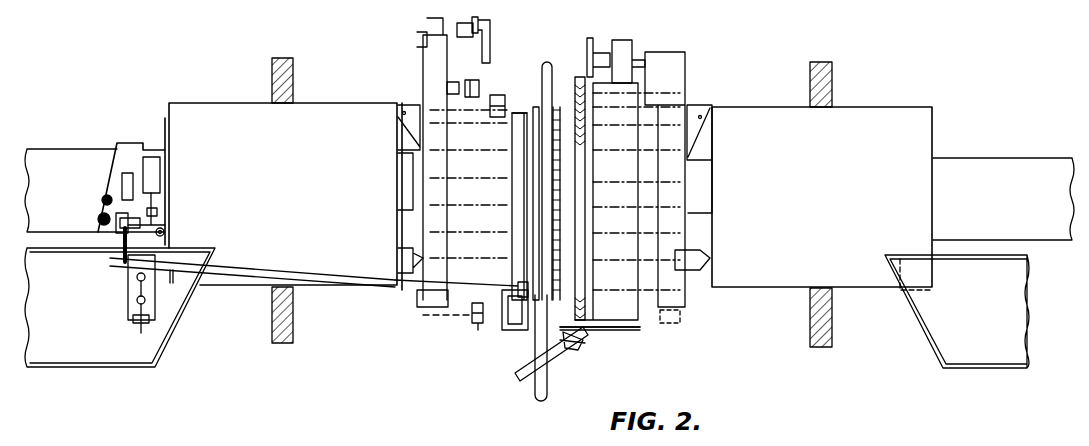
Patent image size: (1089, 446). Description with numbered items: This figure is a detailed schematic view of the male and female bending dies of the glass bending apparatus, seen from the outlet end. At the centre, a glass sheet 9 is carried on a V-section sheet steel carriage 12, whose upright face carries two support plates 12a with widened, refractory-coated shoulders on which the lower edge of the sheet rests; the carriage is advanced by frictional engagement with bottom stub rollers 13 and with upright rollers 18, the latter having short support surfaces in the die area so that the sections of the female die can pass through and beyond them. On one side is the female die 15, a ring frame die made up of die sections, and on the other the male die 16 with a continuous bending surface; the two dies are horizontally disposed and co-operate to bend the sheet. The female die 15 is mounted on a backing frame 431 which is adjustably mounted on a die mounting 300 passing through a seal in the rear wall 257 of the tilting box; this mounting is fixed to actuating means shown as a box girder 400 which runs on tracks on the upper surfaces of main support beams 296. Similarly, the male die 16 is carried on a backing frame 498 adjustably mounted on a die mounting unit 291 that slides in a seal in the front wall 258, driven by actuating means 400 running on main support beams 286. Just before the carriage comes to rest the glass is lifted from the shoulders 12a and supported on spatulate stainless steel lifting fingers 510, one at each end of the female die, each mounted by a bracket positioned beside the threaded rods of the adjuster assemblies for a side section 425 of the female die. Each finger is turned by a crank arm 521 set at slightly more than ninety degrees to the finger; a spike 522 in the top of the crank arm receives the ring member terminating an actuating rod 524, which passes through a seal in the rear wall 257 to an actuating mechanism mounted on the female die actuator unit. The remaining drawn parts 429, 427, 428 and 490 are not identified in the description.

The box girder 400 is at (77, 157).
The main support beams 296 is at (110, 345).
The rear wall 257 is at (272, 72).
The die mounting 300 is at (332, 112).
The actuating rod 524 is at (337, 280).
The backing frame 431 is at (422, 308).
The column 429 is at (423, 72).
The bolt 427 is at (498, 95).
The female die 15 is at (524, 98).
The glass sheet 9 is at (560, 113).
The upright rollers 18 is at (535, 132).
The male die 16 is at (582, 53).
The side section 425 is at (527, 218).
The spike 522 is at (523, 285).
The bolt 428 is at (478, 330).
The crank arm 521 is at (523, 333).
The lifting finger 510 is at (542, 364).
The carriage 12 is at (585, 345).
The bottom stub rollers 13 is at (562, 357).
The support plates 12a is at (610, 328).
The frame 490 is at (580, 297).
The backing frame 498 is at (688, 107).
The die mounting unit 291 is at (778, 113).
The front wall 258 is at (830, 85).
The main support beams 286 is at (995, 353).